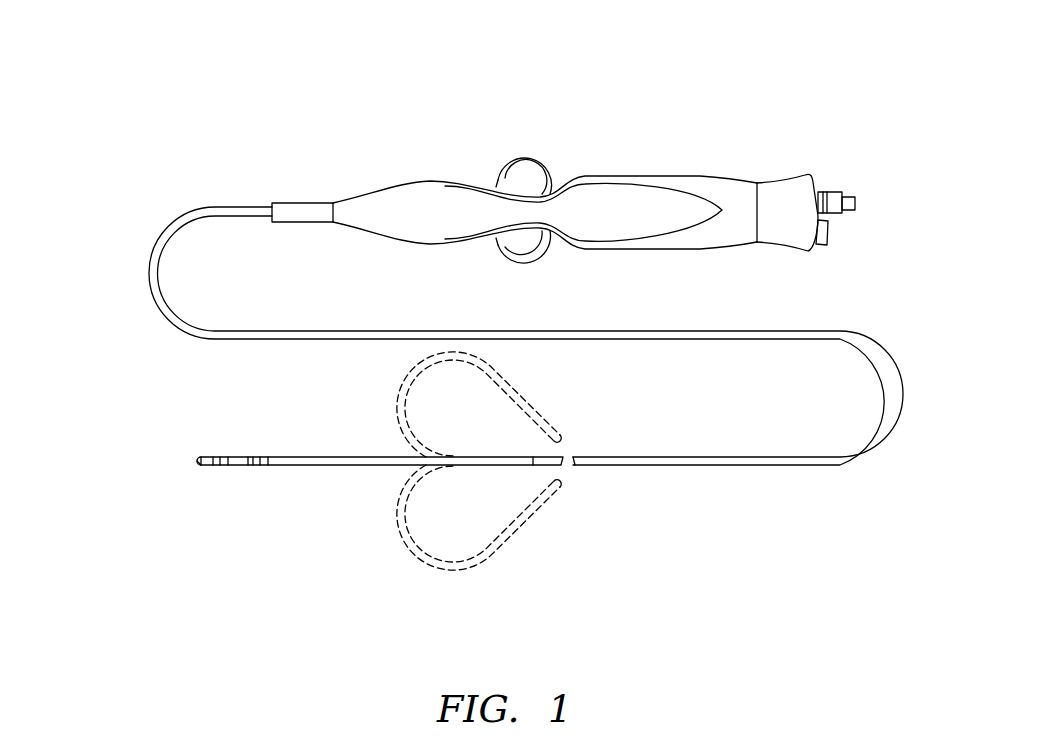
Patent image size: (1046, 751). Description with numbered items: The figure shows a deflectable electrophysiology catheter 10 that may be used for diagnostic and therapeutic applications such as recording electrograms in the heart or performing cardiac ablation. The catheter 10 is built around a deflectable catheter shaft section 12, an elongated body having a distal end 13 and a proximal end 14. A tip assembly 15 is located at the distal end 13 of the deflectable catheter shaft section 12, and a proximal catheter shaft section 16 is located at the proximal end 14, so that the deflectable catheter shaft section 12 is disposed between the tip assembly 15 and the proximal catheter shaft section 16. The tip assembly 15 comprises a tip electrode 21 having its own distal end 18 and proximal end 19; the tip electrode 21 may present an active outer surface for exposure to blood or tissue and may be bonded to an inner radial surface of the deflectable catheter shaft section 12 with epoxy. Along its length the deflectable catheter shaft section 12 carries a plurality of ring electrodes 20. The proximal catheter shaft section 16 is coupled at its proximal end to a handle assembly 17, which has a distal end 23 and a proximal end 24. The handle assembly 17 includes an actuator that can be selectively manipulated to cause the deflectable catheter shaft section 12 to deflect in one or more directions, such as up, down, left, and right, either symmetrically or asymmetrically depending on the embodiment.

The catheter 10 is at (400, 87).
The deflectable catheter shaft section 12 is at (213, 472).
The distal end 13 is at (217, 457).
The proximal end 14 is at (537, 467).
The tip assembly 15 is at (190, 465).
The proximal catheter shaft section 16 is at (785, 467).
The handle assembly 17 is at (678, 170).
The distal end 18 is at (196, 457).
The proximal end 19 is at (213, 457).
The ring electrodes 20 is at (223, 457).
The tip electrode 21 is at (197, 467).
The distal end 23 is at (298, 203).
The proximal end 24 is at (815, 183).